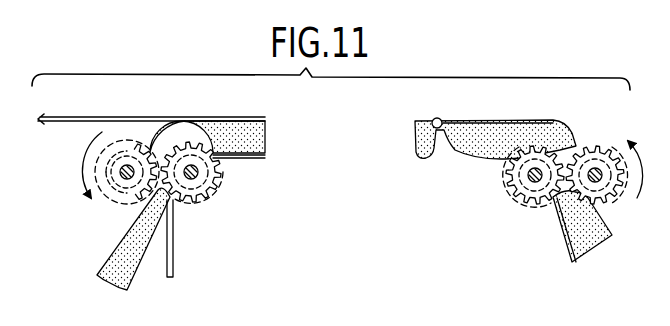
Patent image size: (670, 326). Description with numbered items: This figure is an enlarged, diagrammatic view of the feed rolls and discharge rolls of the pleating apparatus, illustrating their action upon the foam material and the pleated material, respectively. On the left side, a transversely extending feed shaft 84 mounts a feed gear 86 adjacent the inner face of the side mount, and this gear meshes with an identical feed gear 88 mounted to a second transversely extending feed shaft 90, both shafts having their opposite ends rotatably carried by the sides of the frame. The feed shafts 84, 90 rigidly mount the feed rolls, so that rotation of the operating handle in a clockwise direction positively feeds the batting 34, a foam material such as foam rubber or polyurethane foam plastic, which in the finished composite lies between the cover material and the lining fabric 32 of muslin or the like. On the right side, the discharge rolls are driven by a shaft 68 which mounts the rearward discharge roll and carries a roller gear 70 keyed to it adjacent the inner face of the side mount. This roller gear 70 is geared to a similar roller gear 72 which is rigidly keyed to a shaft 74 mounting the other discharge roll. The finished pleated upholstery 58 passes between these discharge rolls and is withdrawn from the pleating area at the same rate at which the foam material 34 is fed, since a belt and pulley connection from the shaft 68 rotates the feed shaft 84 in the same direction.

The lining fabric 32 is at (150, 120).
The batting 34 is at (132, 233).
The pleated upholstery 58 is at (510, 127).
The shaft 68 is at (600, 179).
The roller gear 70 is at (597, 150).
The roller gear 72 is at (500, 165).
The shaft 74 is at (530, 178).
The feed shaft 84 is at (127, 168).
The feed gear 86 is at (98, 167).
The feed gear 88 is at (202, 198).
The feed shaft 90 is at (196, 177).